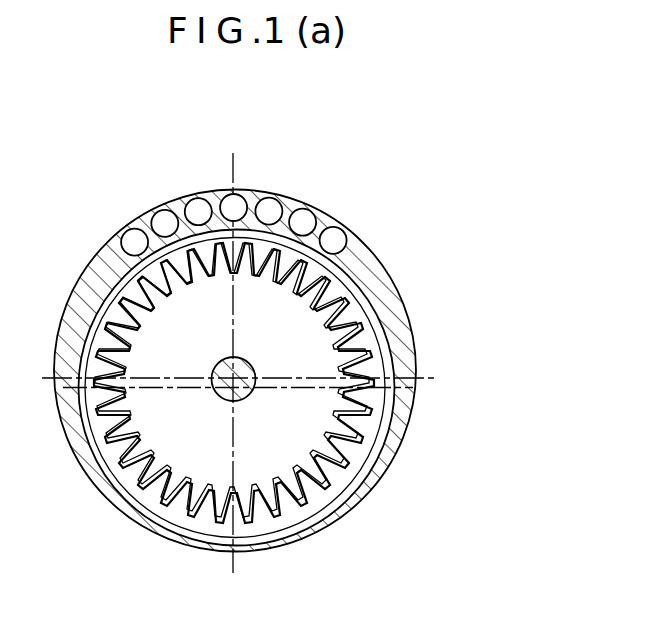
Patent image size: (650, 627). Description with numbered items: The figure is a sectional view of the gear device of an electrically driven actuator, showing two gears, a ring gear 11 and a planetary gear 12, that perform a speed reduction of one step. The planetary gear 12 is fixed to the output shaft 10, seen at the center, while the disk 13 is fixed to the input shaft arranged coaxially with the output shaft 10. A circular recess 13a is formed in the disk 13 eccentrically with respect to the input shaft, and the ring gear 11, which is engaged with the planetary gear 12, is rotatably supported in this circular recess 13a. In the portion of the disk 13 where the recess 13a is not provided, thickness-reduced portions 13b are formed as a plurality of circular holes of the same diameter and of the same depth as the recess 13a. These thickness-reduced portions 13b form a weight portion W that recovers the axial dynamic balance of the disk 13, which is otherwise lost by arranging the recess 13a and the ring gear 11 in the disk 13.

The weight portion W is at (292, 188).
The output shaft 10 is at (253, 363).
The ring gear 11 is at (318, 503).
The planetary gear 12 is at (315, 427).
The disk 13 is at (364, 268).
The circular recess 13a is at (380, 294).
The thickness-reduced portions 13b is at (233, 210).